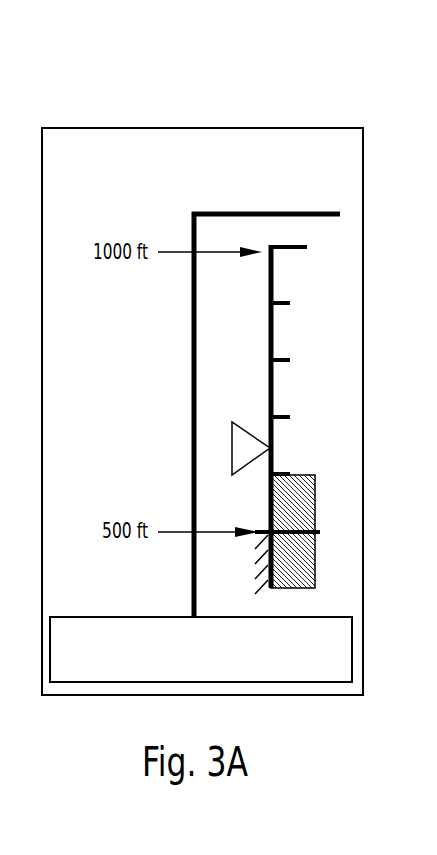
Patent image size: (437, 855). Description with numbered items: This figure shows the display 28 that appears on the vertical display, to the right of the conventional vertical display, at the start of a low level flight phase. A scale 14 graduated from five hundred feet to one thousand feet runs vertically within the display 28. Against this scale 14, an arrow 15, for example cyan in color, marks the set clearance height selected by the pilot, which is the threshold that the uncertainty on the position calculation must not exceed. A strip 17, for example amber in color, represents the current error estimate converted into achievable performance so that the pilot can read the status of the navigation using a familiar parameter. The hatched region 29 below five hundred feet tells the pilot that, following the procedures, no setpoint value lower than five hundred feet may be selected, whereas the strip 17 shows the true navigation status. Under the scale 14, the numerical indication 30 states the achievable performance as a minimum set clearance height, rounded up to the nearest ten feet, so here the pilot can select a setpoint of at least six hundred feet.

The display 28 is at (197, 128).
The scale 14 is at (282, 277).
The arrow 15 is at (232, 450).
The strip 17 is at (315, 500).
The hatched region 29 is at (235, 563).
The numerical indication 30 is at (289, 682).